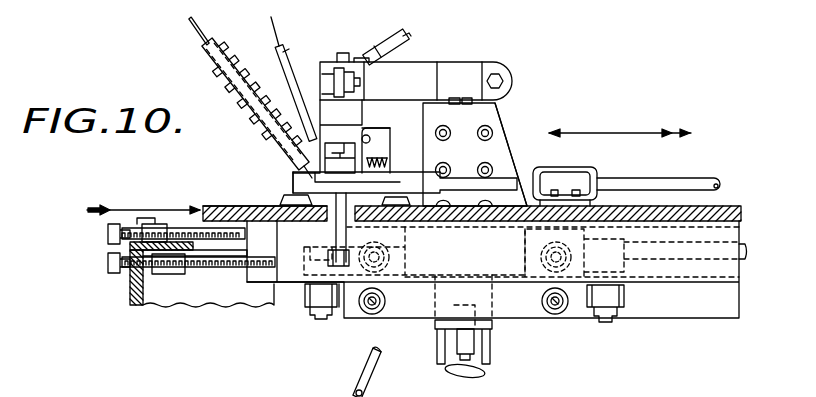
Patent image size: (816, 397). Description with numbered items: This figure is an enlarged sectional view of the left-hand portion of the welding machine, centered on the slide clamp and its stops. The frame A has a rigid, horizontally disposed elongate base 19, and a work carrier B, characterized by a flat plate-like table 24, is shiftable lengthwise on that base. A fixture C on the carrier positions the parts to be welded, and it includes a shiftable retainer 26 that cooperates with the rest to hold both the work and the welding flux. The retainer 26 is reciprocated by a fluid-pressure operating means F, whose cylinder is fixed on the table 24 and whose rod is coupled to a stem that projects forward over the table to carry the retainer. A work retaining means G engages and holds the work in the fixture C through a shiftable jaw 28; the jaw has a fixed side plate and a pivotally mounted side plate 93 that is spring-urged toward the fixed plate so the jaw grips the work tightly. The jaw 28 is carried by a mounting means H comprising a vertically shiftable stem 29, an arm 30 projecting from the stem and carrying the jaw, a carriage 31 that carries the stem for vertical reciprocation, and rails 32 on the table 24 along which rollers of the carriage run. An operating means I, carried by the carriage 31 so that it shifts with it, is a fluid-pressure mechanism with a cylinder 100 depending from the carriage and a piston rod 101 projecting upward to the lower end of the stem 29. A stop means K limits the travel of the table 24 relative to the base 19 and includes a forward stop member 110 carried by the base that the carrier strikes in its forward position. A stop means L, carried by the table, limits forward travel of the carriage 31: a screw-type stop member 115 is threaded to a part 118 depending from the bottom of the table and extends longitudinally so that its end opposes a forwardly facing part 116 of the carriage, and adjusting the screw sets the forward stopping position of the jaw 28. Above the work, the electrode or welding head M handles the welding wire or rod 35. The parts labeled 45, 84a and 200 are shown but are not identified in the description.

The base 19 is at (162, 306).
The table 24 is at (692, 201).
The retainer 26 is at (403, 182).
The shiftable jaw 28 is at (380, 150).
The stem 29 is at (478, 100).
The arm 30 is at (413, 70).
The carriage 31 is at (498, 145).
The rails 32 is at (668, 285).
The welding wire or rod 35 is at (195, 35).
The guide 45 is at (130, 293).
The rod 84a is at (676, 180).
The side plate 93 is at (306, 297).
The cylinder 100 is at (482, 371).
The piston rod 101 is at (468, 378).
The forward stop member 110 is at (176, 224).
The stop member 115 is at (207, 268).
The forwardly facing part 116 is at (403, 248).
The part depending from table 118 is at (156, 270).
The stop 200 is at (272, 182).
The frame A is at (212, 297).
The work carrier B is at (220, 203).
The fixture C is at (285, 185).
The operating means F is at (620, 178).
The work retaining means G is at (350, 130).
The mounting means H is at (505, 106).
The operating means I is at (497, 344).
The stop means K is at (106, 233).
The stop means L is at (106, 262).
The electrode or welding head M is at (228, 88).